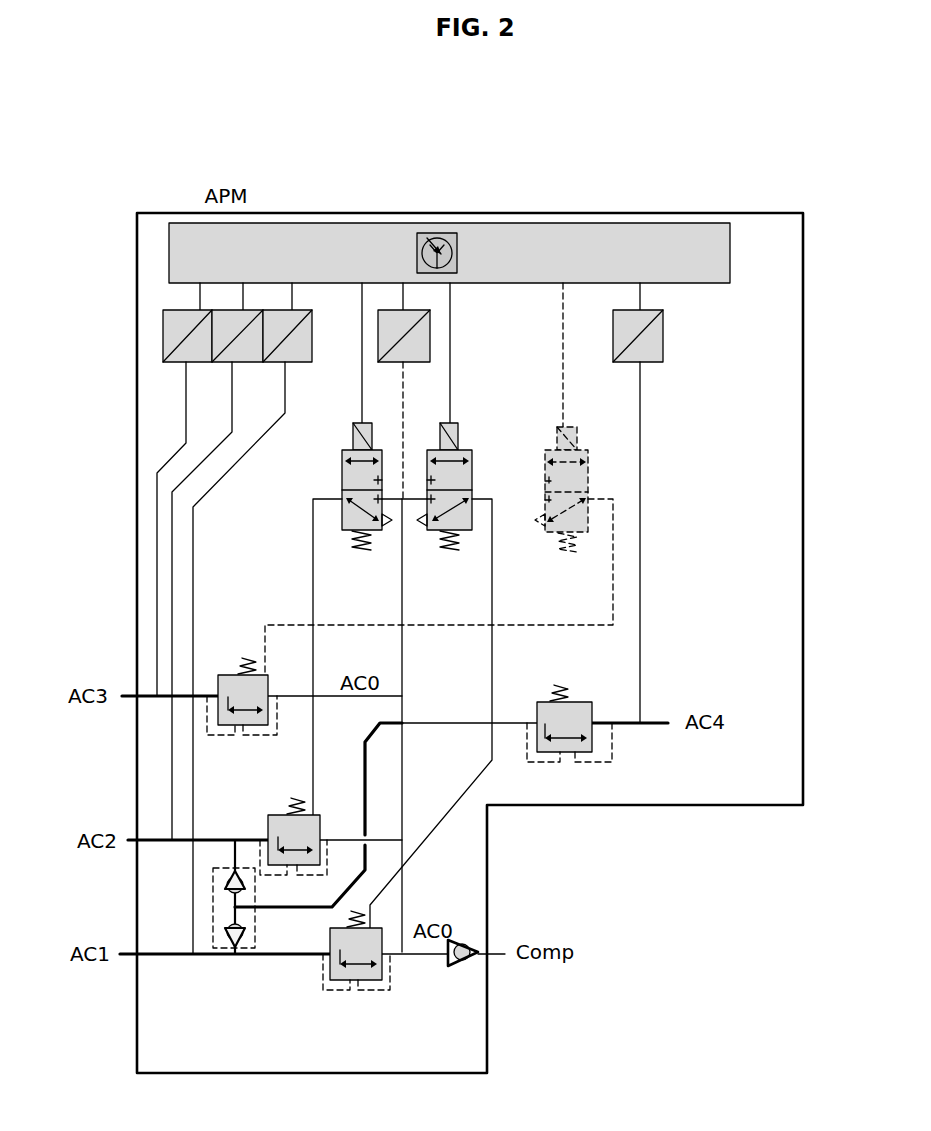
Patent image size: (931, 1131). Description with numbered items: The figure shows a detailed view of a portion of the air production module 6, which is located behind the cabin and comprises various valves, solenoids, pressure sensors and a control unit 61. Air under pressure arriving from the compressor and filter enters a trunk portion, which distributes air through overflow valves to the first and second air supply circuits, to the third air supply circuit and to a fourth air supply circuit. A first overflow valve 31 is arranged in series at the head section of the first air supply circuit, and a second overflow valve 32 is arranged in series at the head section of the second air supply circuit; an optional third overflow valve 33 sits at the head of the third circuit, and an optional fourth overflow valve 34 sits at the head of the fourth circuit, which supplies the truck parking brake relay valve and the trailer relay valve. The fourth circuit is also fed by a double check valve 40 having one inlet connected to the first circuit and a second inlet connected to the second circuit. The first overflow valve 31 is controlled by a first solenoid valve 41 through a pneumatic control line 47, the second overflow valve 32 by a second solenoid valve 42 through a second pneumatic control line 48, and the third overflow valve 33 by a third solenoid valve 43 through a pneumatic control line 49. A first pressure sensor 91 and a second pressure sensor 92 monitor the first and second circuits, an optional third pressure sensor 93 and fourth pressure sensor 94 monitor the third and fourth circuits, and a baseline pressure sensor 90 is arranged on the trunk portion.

The air production module 6 is at (732, 208).
The control unit 61 is at (730, 257).
The baseline pressure sensor 90 is at (430, 345).
The first pressure sensor 91 is at (312, 338).
The second pressure sensor 92 is at (243, 362).
The third pressure sensor 93 is at (163, 338).
The fourth pressure sensor 94 is at (663, 335).
The first solenoid valve 41 is at (486, 466).
The second solenoid valve 42 is at (337, 448).
The third solenoid valve 43 is at (602, 467).
The pneumatic control line 47 is at (492, 560).
The second pneumatic control line 48 is at (313, 525).
The pneumatic control line 49 is at (613, 555).
The first overflow valve 31 is at (330, 958).
The second overflow valve 32 is at (282, 812).
The third overflow valve 33 is at (226, 672).
The fourth overflow valve 34 is at (592, 740).
The double check valve 40 is at (216, 922).